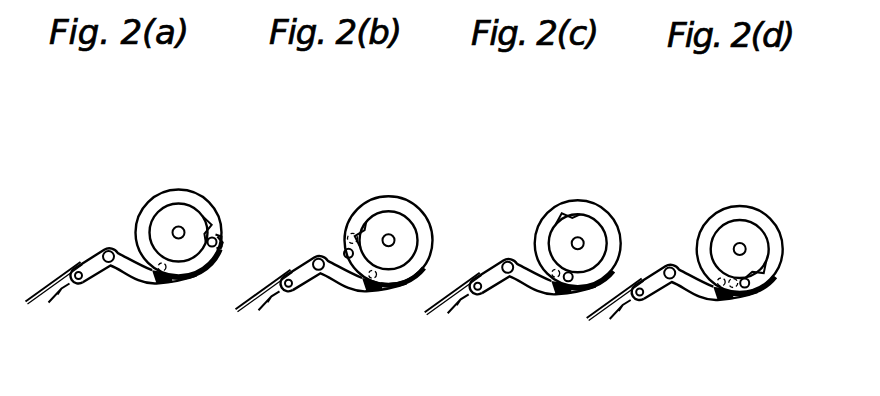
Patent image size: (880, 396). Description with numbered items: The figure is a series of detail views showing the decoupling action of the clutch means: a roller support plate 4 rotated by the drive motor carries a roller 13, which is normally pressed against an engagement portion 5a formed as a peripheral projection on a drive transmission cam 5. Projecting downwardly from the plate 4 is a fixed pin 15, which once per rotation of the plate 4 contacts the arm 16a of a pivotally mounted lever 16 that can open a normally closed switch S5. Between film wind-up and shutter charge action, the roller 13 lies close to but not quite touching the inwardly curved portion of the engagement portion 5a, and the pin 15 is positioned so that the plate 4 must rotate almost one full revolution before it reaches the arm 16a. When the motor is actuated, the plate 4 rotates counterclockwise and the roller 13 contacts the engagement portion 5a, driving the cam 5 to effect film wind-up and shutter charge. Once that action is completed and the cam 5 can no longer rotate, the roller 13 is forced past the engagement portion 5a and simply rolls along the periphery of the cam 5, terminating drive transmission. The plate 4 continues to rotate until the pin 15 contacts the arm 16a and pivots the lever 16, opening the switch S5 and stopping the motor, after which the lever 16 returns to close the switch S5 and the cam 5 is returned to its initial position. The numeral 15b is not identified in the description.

In FIG. 2A, the roller support plate 4 is at (154, 193).
In FIG. 2B, the roller support plate 4 is at (380, 194).
In FIG. 2C, the roller support plate 4 is at (577, 198).
In FIG. 2D, the roller support plate 4 is at (725, 205).
In FIG. 2A, the drive transmission cam 5 is at (178, 208).
In FIG. 2B, the drive transmission cam 5 is at (400, 218).
In FIG. 2C, the drive transmission cam 5 is at (587, 230).
In FIG. 2D, the drive transmission cam 5 is at (749, 230).
In FIG. 2A, the engagement portion 5a is at (210, 214).
In FIG. 2A, the roller 13 is at (219, 234).
In FIG. 2B, the roller 13 is at (341, 248).
In FIG. 2C, the roller 13 is at (570, 272).
In FIG. 2D, the roller 13 is at (746, 289).
In FIG. 2A, the pin 15 is at (209, 244).
In FIG. 2B, the pin 15 is at (348, 229).
In FIG. 2C, the pin 15 is at (549, 267).
In FIG. 2D, the pin 15 is at (734, 292).
In FIG. 2A, the pivot pin of arm 15b is at (78, 279).
In FIG. 2B, the pivot pin of arm 15b is at (285, 290).
In FIG. 2C, the pivot pin of arm 15b is at (470, 287).
In FIG. 2D, the pivot pin of arm 15b is at (635, 294).
In FIG. 2A, the lever 16 is at (125, 280).
In FIG. 2B, the lever 16 is at (335, 283).
In FIG. 2C, the lever 16 is at (515, 288).
In FIG. 2D, the lever 16 is at (690, 290).
In FIG. 2A, the arm 16a is at (160, 270).
In FIG. 2B, the arm 16a is at (373, 278).
In FIG. 2C, the arm 16a is at (555, 290).
In FIG. 2D, the arm 16a is at (722, 294).
In FIG. 2A, the switch S5 is at (52, 306).
In FIG. 2B, the switch S5 is at (261, 309).
In FIG. 2C, the switch S5 is at (448, 310).
In FIG. 2D, the switch S5 is at (615, 313).